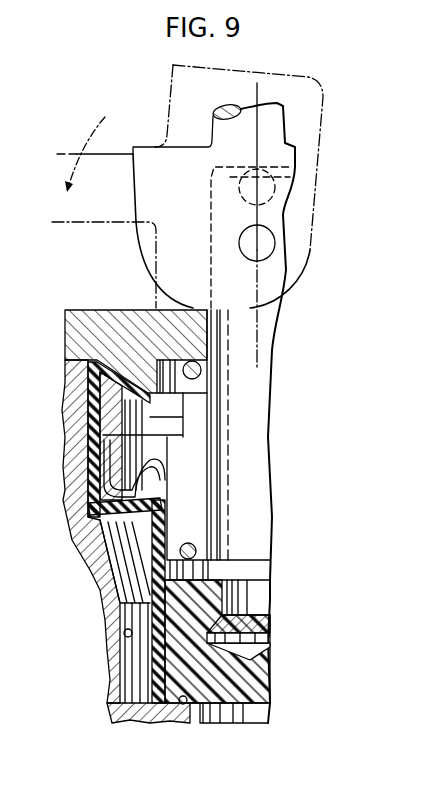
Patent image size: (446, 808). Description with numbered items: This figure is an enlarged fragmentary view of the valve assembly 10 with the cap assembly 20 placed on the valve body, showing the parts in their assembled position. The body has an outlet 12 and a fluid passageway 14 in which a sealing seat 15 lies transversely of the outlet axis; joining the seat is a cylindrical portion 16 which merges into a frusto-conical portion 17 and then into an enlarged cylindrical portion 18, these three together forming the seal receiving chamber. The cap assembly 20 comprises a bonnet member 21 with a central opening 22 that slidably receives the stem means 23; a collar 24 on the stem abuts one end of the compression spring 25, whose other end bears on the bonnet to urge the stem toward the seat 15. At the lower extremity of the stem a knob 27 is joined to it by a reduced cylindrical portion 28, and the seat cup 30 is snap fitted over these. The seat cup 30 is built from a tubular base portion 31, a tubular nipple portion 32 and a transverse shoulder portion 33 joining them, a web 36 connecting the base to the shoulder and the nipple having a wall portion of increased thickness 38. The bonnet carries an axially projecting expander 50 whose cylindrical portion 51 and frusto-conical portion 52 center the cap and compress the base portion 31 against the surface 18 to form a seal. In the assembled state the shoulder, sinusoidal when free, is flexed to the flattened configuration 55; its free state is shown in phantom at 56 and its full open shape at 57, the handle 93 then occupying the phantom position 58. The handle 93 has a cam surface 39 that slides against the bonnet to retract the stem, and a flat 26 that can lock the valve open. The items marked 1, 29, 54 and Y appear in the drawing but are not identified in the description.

The closure assembly 1 is at (95, 428).
The valve assembly 10 is at (145, 742).
The outlet 12 is at (232, 717).
The fluid passageway 14 is at (128, 670).
The sealing seat 15 is at (185, 704).
The cylindrical portion 16 is at (124, 634).
The frusto-conical portion 17 is at (107, 562).
The enlarged cylindrical portion 18 is at (105, 440).
The cap assembly 20 is at (96, 302).
The bonnet member 21 is at (72, 328).
The central opening 22 is at (205, 347).
The stem means 23 is at (260, 387).
The collar 24 is at (265, 572).
The compression spring 25 is at (196, 550).
The flat 26 is at (275, 73).
The knob 27 is at (265, 627).
The reduced cylindrical portion 28 is at (268, 600).
The pin hole 29 is at (267, 247).
The seat cup 30 is at (127, 685).
The tubular base portion 31 is at (78, 393).
The tubular nipple portion 32 is at (278, 695).
The transverse shoulder portion 33 is at (110, 525).
The web 36 is at (100, 470).
The wall portion of increased thickness 38 is at (155, 570).
The cam surface 39 is at (138, 244).
The expander 50 is at (186, 400).
The cylindrical portion 51 is at (105, 362).
The frusto-conical portion 52 is at (68, 414).
The lip 54 is at (100, 382).
The flattened configuration 55 is at (160, 496).
The free state configuration 56 is at (177, 470).
The full open configuration 57 is at (160, 450).
The handle open position 58 is at (100, 147).
The handle 93 is at (278, 119).
The axis Y is at (260, 215).